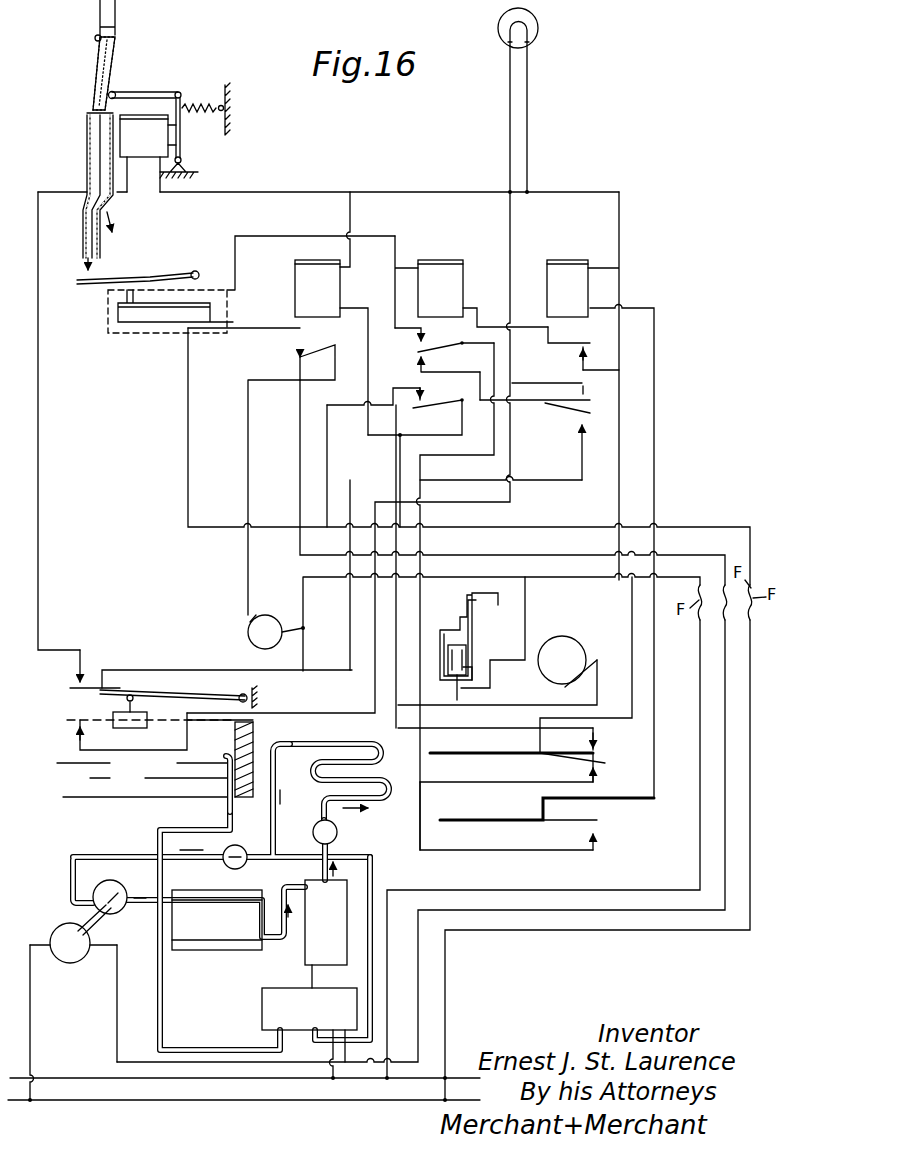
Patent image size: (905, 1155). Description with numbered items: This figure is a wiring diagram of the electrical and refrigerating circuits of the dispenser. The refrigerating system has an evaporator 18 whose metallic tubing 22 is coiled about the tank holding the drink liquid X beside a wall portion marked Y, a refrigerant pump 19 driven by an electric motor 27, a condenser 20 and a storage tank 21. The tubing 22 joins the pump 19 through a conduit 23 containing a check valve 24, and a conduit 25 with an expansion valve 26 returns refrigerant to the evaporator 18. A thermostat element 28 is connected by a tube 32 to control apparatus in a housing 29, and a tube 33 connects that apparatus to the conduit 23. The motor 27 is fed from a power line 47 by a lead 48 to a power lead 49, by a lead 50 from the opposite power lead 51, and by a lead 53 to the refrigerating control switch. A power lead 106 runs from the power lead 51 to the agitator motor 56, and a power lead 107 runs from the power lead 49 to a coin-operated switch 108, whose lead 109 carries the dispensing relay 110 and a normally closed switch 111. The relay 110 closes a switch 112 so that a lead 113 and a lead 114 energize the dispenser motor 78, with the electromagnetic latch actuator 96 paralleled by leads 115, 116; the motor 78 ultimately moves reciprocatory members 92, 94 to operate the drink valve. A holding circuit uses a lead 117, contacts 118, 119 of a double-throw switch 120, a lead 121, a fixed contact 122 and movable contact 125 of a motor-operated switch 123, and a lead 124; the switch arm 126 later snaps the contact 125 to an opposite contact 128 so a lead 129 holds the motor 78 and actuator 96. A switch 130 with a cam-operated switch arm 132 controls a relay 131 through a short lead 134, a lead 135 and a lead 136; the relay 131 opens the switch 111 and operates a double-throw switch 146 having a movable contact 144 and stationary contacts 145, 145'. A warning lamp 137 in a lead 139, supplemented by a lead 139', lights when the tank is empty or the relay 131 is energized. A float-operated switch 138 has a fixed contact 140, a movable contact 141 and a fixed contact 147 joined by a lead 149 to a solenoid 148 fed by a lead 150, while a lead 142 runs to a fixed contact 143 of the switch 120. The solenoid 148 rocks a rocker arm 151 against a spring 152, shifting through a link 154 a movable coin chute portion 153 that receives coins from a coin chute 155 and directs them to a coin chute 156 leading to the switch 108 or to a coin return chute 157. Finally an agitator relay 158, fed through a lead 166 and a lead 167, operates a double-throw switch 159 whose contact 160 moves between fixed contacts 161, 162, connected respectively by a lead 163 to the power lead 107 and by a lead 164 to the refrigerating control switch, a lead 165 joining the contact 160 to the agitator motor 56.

The coin chute 155 is at (120, 13).
The movable coin chute portion 153 is at (93, 70).
The link 154 is at (144, 94).
The spring 152 is at (203, 106).
The rocker arm 151 is at (182, 159).
The solenoid 148 is at (157, 145).
The coin chute 156 is at (92, 143).
The coin return chute 157 is at (107, 168).
The lead 150 is at (282, 192).
The lead 149 is at (38, 483).
The fixed contact 147 is at (78, 685).
The warning light 137 is at (540, 30).
The lead 139 is at (430, 377).
The short lead 134 is at (590, 262).
The lead 135 is at (656, 418).
The lead 166 is at (352, 215).
The lead 109 is at (236, 270).
The relay 158 is at (331, 299).
The lead 117 is at (395, 292).
The dispensing relay 110 is at (455, 299).
The relay 131 is at (581, 299).
The coin-operated momentary contact switch 108 is at (140, 312).
The lead 163 is at (236, 330).
The movable contact 160 is at (305, 356).
The fixed contact 161 is at (298, 342).
The double-throw relay switch 159 is at (292, 354).
The fixed contact 162 is at (299, 359).
The lead 167 is at (368, 386).
The power lead 107 is at (188, 395).
The lead 164 is at (300, 446).
The power lead 106 is at (304, 617).
The lead 165 is at (248, 453).
The agitator motor 56 is at (272, 615).
The lead 142 is at (480, 390).
The dispensing relay-operated switch 112 is at (416, 417).
The lead 114 is at (327, 462).
The lead 113 is at (432, 435).
The switch contact 118 is at (426, 338).
The movable contact 119 is at (437, 352).
The dispensing relay-operated double-throw switch 120 is at (415, 352).
The fixed contact 143 is at (418, 358).
The lead 121 is at (493, 430).
The relay-operated switch 111 is at (578, 342).
The lead 139' is at (547, 371).
The fixed contact 145' is at (557, 375).
The movable switch contact 144 is at (565, 412).
The double-throw switch 146 is at (584, 405).
The stationary switch contact 145 is at (558, 449).
The reciprocatory member 92 is at (475, 630).
The reciprocatory member 94 is at (451, 640).
The electromagnetic latch actuator 96 is at (460, 665).
The lead 115 is at (490, 673).
The lead 116 is at (449, 700).
The motor 78 is at (567, 655).
The lead 124 is at (632, 648).
The lead 129 is at (515, 727).
The stationary contact 128 is at (589, 745).
The switch arm 126 is at (505, 758).
The movable contact 125 is at (565, 762).
The double-throw switch 123 is at (600, 763).
The fixed contact 122 is at (600, 775).
The lead 136 is at (421, 803).
The switch 130 is at (596, 835).
The switch arm 132 is at (470, 821).
The movable contact 141 is at (90, 688).
The float-operated switch 138 is at (73, 712).
The fixed switch contact 140 is at (70, 728).
The wall Y is at (252, 742).
The drink liquid X is at (133, 793).
The metallic tubing 22 is at (360, 740).
The conduit 23 is at (105, 857).
The tube 33 is at (366, 977).
The tube 32 is at (165, 835).
The thermostat element 28 is at (226, 812).
The conduit 25 is at (318, 877).
The expansion valve 26 is at (338, 832).
The check valve 24 is at (238, 870).
The refrigerant evaporator 18 is at (320, 786).
The refrigerant pump 19 is at (126, 895).
The electric motor 27 is at (68, 957).
The refrigerant condenser 20 is at (213, 940).
The storage tank 21 is at (335, 933).
The housing 29 is at (319, 1019).
The lead 50 is at (318, 1080).
The lead 53 is at (117, 1008).
The lead 48 is at (31, 1036).
The power lead 51 is at (78, 1076).
The power lead 49 is at (100, 1102).
The power line 47 is at (198, 1088).